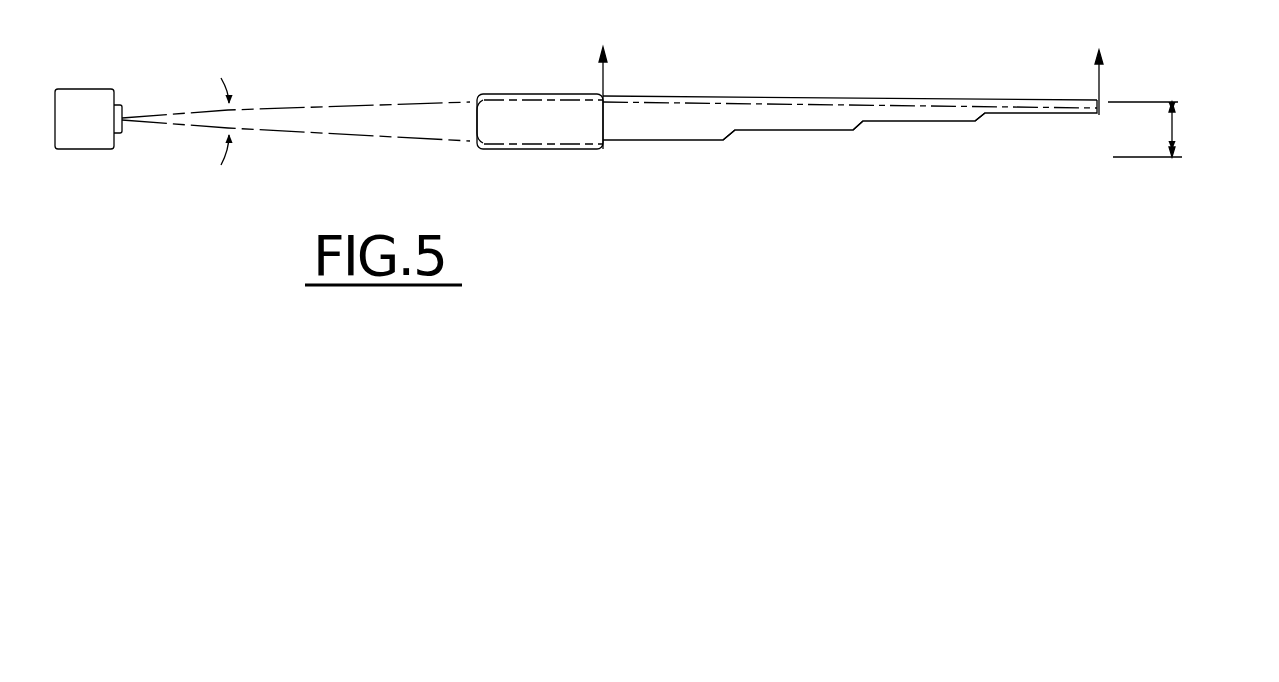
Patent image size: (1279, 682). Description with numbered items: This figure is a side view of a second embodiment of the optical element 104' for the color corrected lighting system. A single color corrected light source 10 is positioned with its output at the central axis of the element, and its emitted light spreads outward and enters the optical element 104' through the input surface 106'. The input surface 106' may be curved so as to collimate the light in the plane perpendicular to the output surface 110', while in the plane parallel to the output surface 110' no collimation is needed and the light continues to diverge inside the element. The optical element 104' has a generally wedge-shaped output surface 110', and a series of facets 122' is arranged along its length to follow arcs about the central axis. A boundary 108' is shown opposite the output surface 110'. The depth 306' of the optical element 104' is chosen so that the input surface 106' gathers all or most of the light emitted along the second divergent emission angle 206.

The color corrected light source 10 is at (97, 89).
The second divergent emission angle 206 is at (296, 140).
The input surface 106' is at (419, 103).
The output surface 110' is at (543, 65).
The bottom cladding 108' is at (536, 173).
The optical element 104' is at (787, 93).
The facets 122' is at (880, 125).
The depth 306' is at (1180, 129).